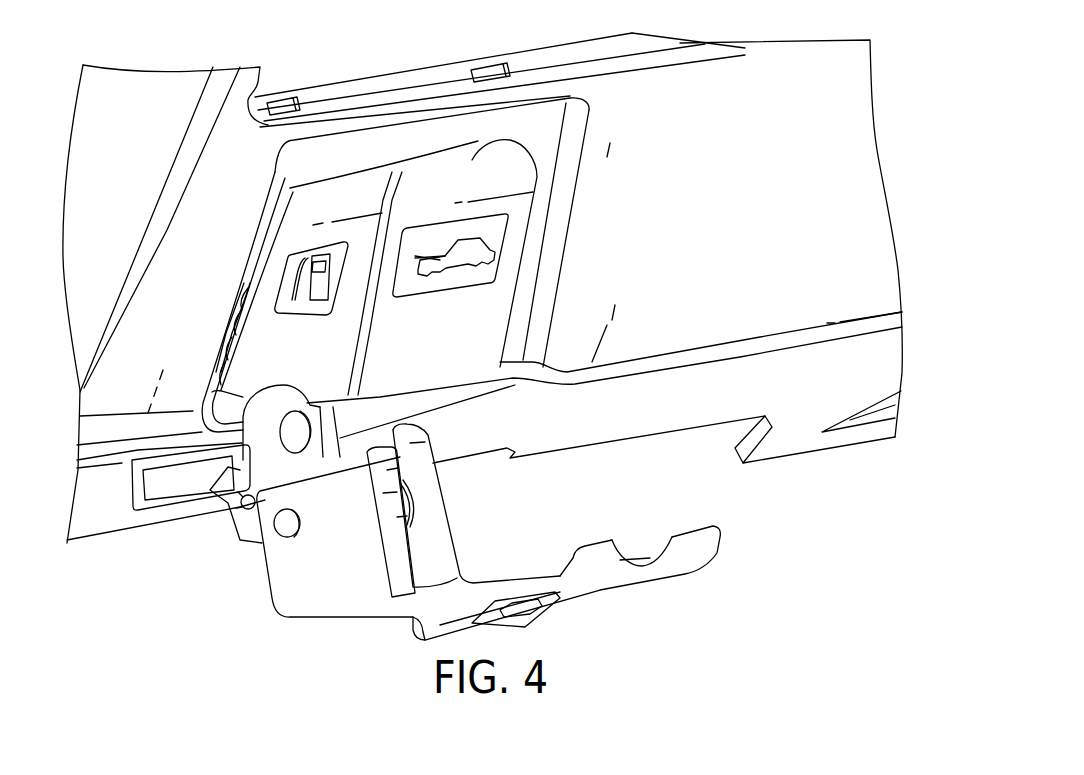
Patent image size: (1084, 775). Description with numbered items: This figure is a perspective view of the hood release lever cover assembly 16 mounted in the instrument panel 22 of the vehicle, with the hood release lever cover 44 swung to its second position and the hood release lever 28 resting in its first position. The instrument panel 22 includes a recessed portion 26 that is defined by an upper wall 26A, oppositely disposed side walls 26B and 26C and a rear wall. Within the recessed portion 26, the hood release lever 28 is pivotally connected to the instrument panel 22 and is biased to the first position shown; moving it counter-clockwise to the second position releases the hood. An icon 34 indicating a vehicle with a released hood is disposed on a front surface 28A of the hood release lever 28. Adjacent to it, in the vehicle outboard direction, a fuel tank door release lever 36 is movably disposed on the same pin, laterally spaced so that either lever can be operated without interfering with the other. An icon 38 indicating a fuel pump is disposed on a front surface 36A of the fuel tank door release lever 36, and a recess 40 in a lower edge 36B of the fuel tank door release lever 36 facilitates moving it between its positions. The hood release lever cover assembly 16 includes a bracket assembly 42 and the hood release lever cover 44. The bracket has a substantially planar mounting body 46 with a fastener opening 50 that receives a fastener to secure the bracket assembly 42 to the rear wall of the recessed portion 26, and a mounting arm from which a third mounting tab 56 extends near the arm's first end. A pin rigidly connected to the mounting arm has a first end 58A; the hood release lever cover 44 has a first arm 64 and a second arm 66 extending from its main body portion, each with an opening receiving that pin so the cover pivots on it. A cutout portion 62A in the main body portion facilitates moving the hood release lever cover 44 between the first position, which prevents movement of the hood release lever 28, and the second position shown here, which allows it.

The hood release lever cover assembly 16 is at (118, 528).
The instrument panel 22 is at (788, 95).
The recessed portion 26 is at (425, 118).
The upper wall 26A is at (347, 132).
The side wall 26B is at (257, 190).
The side wall 26C is at (568, 190).
The hood release lever 28 is at (470, 158).
The front surface 28A is at (463, 343).
The icon 34 is at (498, 273).
The fuel tank door release lever 36 is at (262, 282).
The front surface 36A is at (260, 353).
The lower edge 36B is at (228, 408).
The icon 38 is at (287, 258).
The recess 40 is at (297, 390).
The bracket assembly 42 is at (165, 527).
The hood release lever cover 44 is at (717, 553).
The mounting body 46 is at (105, 497).
The fastener opening 50 is at (302, 438).
The third mounting tab 56 is at (255, 535).
The first end of pin 58A is at (292, 535).
The cutout portion 62A is at (648, 565).
The first arm 64 is at (313, 590).
The second arm 66 is at (435, 530).